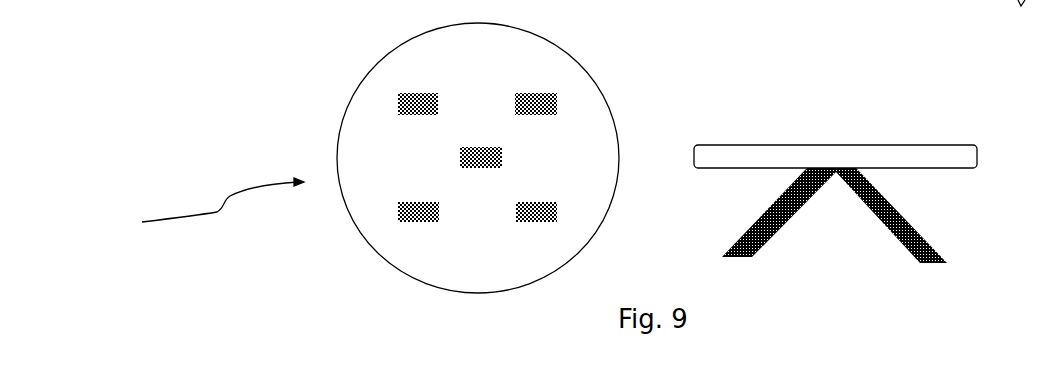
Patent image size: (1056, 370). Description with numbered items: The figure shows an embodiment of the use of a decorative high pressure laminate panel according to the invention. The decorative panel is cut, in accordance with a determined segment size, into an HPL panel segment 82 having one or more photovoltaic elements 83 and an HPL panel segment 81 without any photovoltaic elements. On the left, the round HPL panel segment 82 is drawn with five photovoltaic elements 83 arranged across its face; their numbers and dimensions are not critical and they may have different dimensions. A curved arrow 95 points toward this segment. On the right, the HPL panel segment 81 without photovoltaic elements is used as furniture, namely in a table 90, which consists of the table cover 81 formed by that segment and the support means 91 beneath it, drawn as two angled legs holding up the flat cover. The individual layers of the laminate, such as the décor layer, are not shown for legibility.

The HPL panel segment without photovoltaic elements 81 is at (947, 155).
The HPL panel segment having photovoltaic elements 82 is at (593, 131).
The photovoltaic elements 83 is at (555, 102).
The table 90 is at (854, 150).
The support means 91 is at (933, 242).
The mounting direction arrow 95 is at (210, 200).